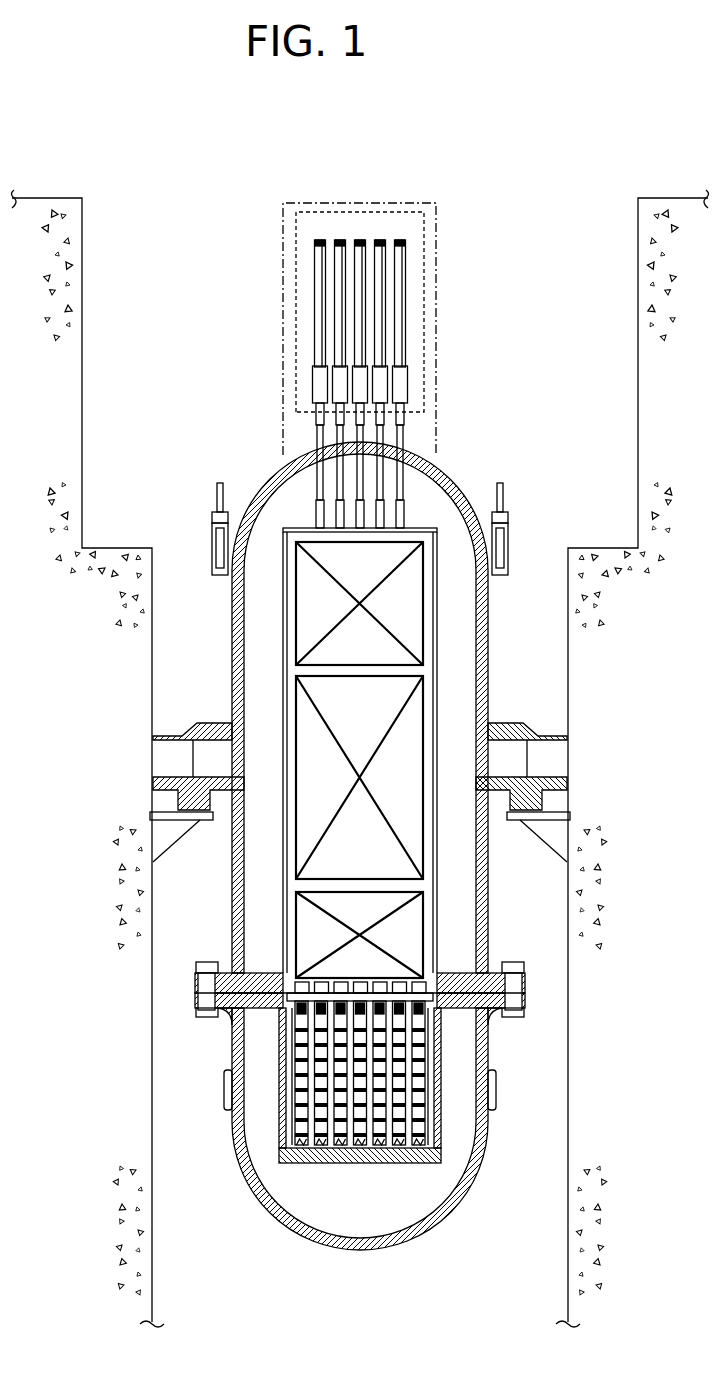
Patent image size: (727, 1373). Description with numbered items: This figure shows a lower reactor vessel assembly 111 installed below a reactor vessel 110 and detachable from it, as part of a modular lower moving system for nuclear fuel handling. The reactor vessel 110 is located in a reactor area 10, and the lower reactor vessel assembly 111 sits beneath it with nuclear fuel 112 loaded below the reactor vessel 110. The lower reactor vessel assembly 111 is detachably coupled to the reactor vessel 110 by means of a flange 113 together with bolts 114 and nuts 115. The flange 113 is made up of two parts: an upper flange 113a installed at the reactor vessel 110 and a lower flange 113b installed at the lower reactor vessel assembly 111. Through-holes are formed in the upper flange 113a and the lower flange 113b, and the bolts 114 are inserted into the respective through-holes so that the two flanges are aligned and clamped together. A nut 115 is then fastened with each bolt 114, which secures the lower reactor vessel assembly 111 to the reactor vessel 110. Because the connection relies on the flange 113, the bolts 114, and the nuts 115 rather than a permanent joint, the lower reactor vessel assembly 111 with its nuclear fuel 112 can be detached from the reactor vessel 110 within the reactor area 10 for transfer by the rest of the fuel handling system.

The reactor area 10 is at (522, 266).
The reactor vessel 110 is at (488, 674).
The lower reactor vessel assembly 111 is at (490, 1050).
The nuclear fuel 112 is at (417, 1163).
The flange 113 is at (194, 991).
The upper flange 113a is at (193, 972).
The lower flange 113b is at (193, 1006).
The bolt 114 is at (512, 968).
The nut 115 is at (515, 1013).